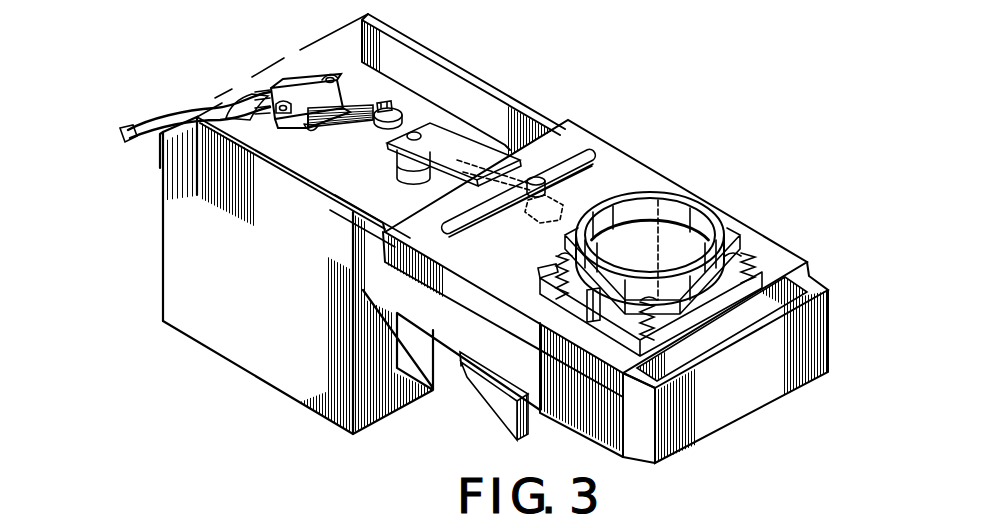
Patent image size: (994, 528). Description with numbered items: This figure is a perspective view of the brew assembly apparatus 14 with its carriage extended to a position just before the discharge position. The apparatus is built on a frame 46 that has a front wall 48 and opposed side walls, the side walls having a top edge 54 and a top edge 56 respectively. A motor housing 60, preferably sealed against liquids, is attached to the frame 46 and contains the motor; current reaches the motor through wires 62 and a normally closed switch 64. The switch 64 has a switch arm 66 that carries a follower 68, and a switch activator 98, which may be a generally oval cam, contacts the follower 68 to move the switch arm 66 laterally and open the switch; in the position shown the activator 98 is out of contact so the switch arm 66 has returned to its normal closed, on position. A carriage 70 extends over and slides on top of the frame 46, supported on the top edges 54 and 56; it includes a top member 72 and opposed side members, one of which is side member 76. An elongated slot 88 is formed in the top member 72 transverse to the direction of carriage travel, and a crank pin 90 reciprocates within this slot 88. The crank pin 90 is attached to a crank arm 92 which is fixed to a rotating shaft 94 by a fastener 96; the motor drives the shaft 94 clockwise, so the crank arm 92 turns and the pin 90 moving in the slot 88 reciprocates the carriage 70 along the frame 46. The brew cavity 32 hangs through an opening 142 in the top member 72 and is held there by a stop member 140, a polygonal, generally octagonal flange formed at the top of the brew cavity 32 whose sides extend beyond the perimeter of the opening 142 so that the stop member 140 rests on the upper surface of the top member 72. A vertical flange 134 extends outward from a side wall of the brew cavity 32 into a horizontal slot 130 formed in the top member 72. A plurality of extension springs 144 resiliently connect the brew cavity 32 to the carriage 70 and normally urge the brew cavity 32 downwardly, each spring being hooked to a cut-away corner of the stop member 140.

The brew assembly apparatus 14 is at (272, 394).
The brew cavity 32 is at (697, 213).
The frame 46 is at (654, 463).
The front wall 48 is at (735, 405).
The top edge 54 is at (475, 80).
The top edge 56 is at (323, 187).
The motor housing 60 is at (260, 313).
The wires 62 is at (127, 127).
The switch 64 is at (300, 90).
The switch arm 66 is at (313, 130).
The follower 68 is at (345, 118).
The carriage 70 is at (631, 150).
The top member 72 is at (637, 182).
The side member 76 is at (590, 413).
The elongated slot 88 is at (587, 150).
The crank pin 90 is at (548, 186).
The crank arm 92 is at (451, 155).
The rotating shaft 94 is at (397, 165).
The fastener 96 is at (412, 132).
The switch activator 98 is at (528, 229).
The horizontal slot 130 is at (587, 313).
The vertical flange 134 is at (596, 323).
The stop member 140 is at (697, 293).
The opening 142 is at (558, 264).
The extension springs 144 is at (757, 262).